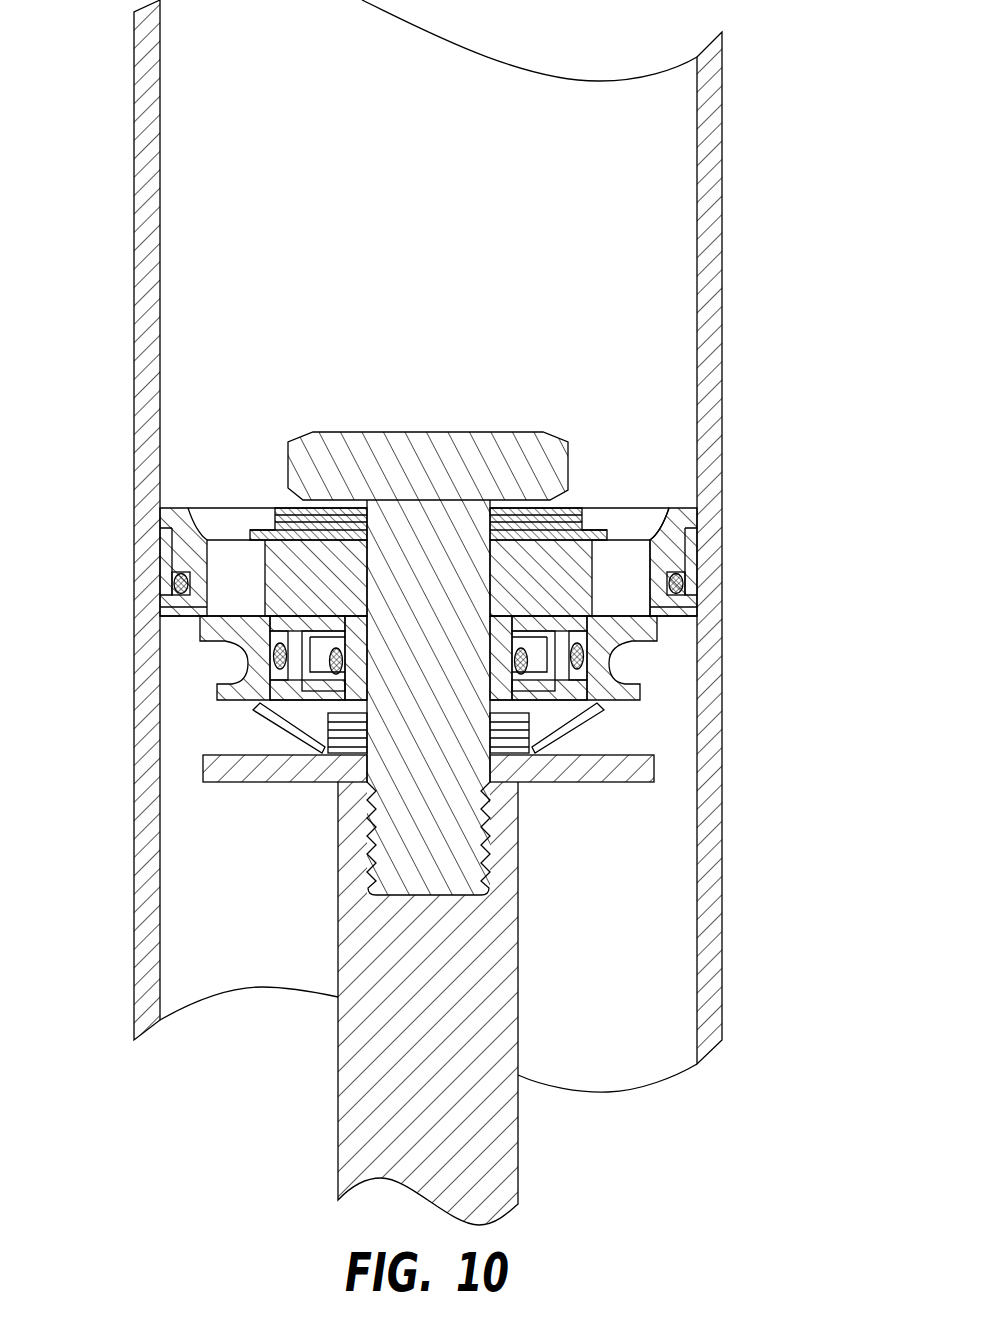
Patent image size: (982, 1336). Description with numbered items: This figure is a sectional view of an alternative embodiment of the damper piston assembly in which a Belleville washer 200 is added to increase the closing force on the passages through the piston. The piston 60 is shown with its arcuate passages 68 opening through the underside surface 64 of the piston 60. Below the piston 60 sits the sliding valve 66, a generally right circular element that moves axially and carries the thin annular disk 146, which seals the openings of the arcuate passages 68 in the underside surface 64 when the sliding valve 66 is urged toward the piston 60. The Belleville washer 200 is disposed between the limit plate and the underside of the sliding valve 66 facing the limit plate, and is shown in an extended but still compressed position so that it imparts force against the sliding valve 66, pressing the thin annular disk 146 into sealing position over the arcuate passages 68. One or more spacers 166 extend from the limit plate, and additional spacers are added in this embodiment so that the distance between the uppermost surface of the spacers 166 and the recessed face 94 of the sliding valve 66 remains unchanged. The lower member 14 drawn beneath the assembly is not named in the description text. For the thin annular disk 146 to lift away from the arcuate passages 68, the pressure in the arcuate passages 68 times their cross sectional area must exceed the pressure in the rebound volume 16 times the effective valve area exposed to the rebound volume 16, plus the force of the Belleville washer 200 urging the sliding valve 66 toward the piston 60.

The lower body 14 is at (618, 964).
The rebound volume 16 is at (659, 413).
The piston 60 is at (690, 516).
The underside surface 64 is at (178, 612).
The sliding valve 66 is at (627, 647).
The arcuate passages 68 is at (627, 557).
The recessed face 94 is at (330, 700).
The thin annular disk 146 is at (672, 590).
The spacers 166 is at (537, 757).
The Belleville washer 200 is at (593, 713).